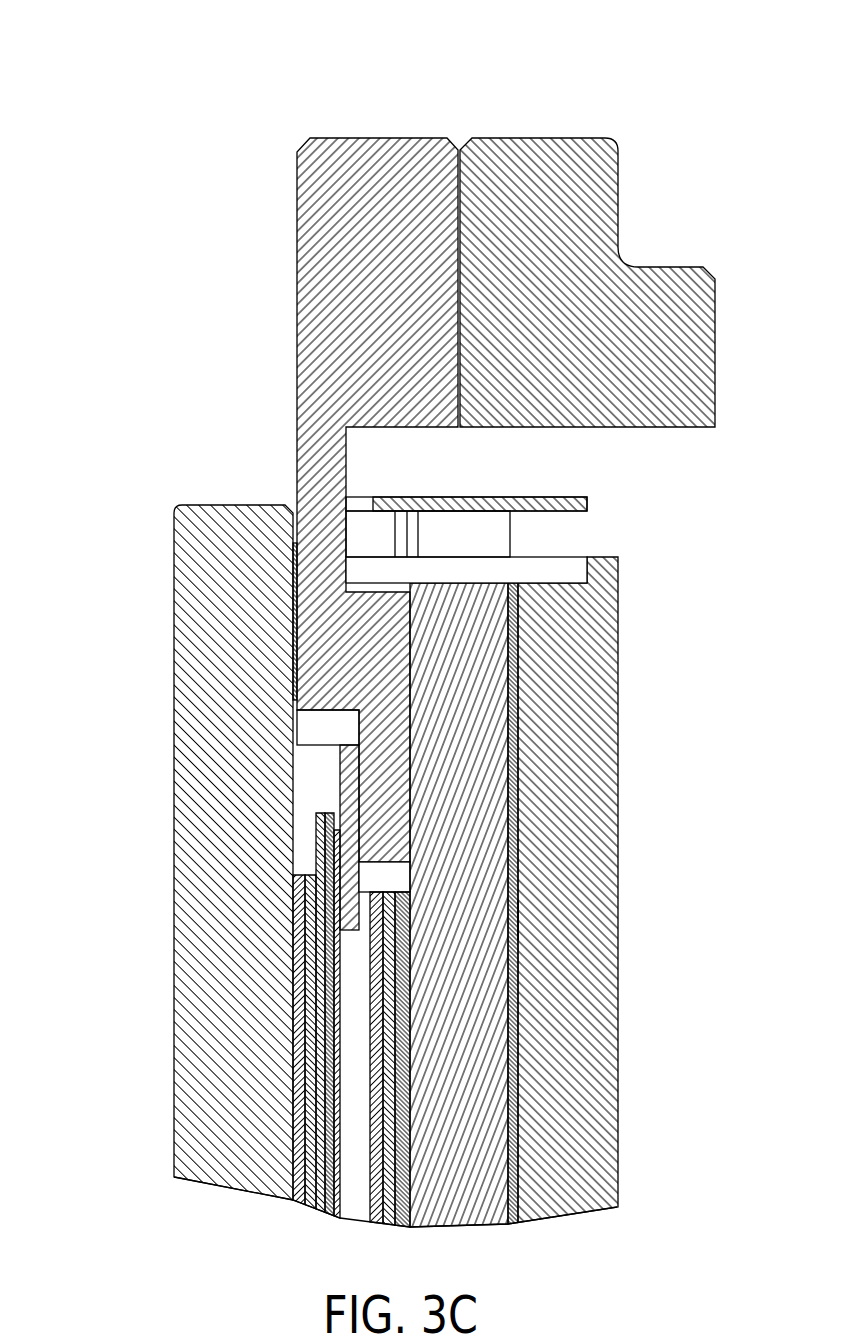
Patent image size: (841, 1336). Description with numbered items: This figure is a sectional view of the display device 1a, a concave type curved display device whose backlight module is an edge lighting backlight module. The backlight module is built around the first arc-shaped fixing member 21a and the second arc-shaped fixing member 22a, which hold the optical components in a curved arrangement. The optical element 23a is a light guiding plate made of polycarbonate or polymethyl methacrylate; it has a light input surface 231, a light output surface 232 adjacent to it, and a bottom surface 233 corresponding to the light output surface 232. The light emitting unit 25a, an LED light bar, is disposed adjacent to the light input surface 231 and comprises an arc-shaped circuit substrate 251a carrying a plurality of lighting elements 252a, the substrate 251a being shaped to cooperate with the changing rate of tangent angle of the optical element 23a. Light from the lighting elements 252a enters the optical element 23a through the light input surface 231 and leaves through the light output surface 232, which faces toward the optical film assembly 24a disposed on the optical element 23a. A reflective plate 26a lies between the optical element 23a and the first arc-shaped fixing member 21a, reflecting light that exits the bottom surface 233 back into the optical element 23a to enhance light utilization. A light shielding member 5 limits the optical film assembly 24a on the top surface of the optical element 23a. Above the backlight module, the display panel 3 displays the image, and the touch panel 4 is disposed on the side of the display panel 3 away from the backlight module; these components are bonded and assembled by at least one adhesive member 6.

The display device 1a is at (128, 42).
The first arc-shaped fixing member 21a is at (560, 137).
The second arc-shaped fixing member 22a is at (388, 147).
The optical element 23a is at (472, 777).
The light input surface 231 is at (456, 583).
The light output surface 232 is at (410, 877).
The bottom surface 233 is at (520, 918).
The optical film assembly 24a is at (398, 1042).
The light emitting unit 25a is at (538, 521).
The substrate 251a is at (582, 503).
The lighting elements 252a is at (495, 533).
The reflective plate 26a is at (523, 685).
The display panel 3 is at (212, 1015).
The touch panel 4 is at (223, 502).
The light shielding member 5 is at (340, 788).
The adhesive member 6 is at (296, 890).